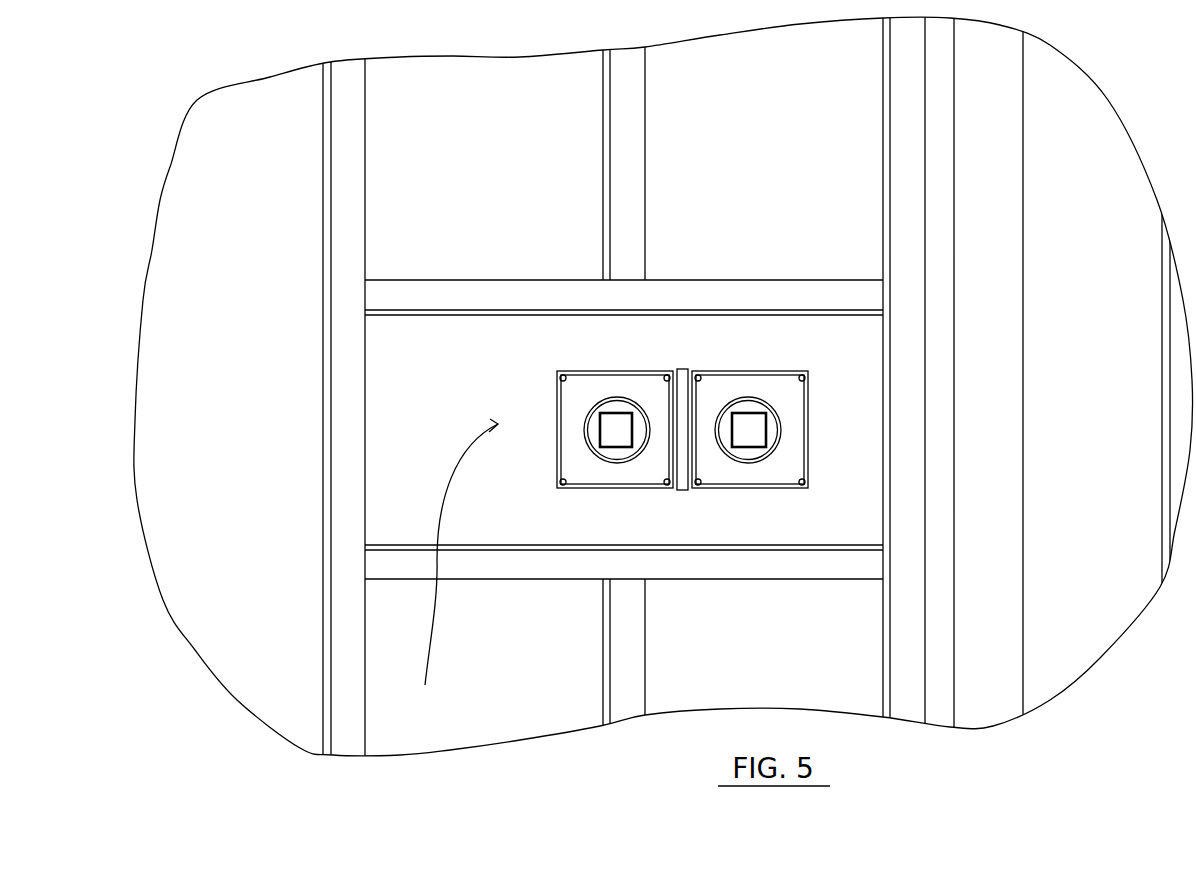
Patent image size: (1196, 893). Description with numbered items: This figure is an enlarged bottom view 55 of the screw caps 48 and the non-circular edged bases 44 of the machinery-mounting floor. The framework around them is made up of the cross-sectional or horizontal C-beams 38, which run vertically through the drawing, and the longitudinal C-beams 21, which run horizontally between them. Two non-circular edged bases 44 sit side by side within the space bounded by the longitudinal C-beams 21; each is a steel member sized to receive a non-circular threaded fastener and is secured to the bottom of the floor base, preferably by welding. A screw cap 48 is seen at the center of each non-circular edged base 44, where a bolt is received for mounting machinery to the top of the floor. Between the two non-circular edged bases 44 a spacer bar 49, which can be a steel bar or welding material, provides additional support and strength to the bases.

The longitudinal C-beam 21 is at (740, 300).
The horizontal C-beam 38 is at (350, 102).
The non-circular edged base 44 is at (575, 403).
The screw cap 48 is at (613, 432).
The spacer bar 49 is at (683, 392).
The enlarged bottom view 55 is at (456, 569).